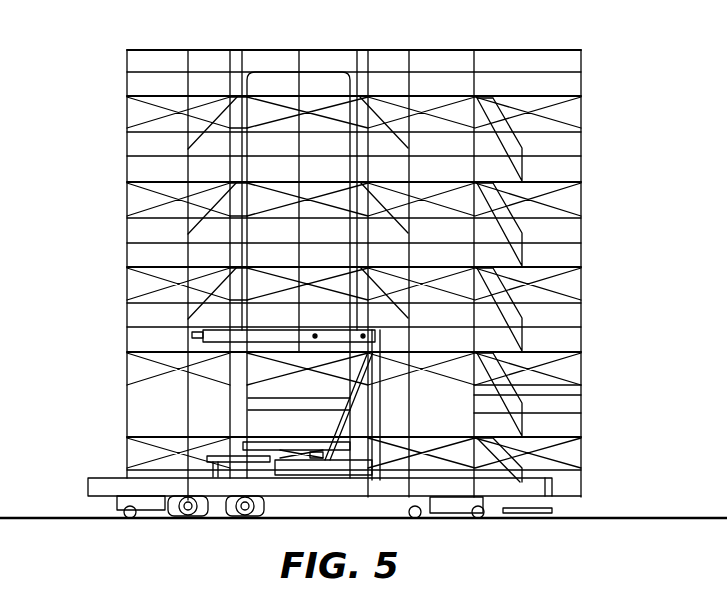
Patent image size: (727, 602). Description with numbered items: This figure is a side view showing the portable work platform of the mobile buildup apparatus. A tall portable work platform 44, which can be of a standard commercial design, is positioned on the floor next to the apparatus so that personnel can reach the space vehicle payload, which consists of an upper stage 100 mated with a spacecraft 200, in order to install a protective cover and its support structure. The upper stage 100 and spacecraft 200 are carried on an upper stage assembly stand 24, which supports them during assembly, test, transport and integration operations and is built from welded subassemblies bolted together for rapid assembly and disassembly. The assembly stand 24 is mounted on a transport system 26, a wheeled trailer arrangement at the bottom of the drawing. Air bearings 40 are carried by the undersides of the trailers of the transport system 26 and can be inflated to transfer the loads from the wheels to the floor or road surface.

The portable work platform 44 is at (528, 93).
The spacecraft 200 is at (257, 317).
The upper stage 100 is at (262, 394).
The upper stage assembly stand 24 is at (381, 400).
The transport system 26 is at (90, 486).
The air bearings 40 is at (148, 512).